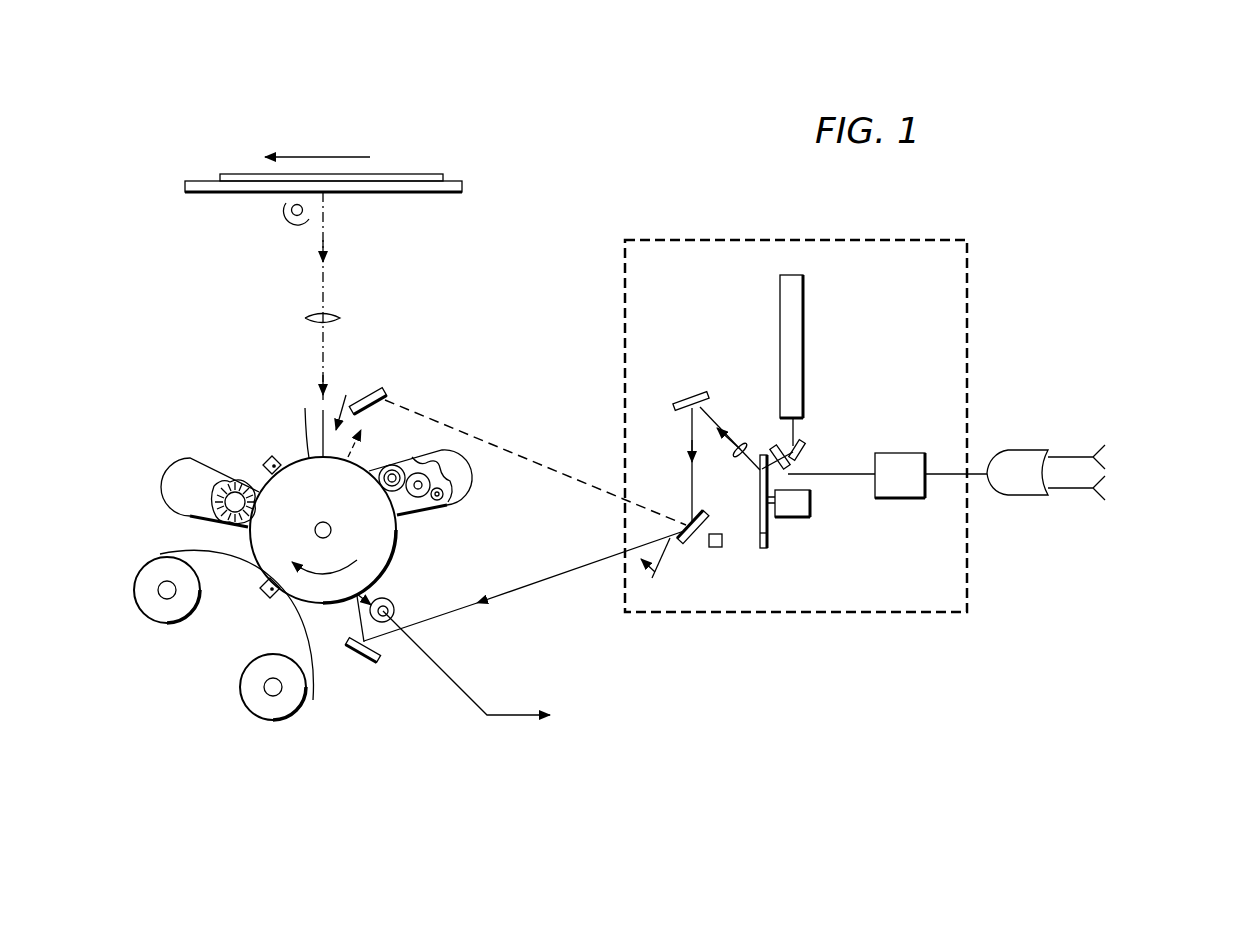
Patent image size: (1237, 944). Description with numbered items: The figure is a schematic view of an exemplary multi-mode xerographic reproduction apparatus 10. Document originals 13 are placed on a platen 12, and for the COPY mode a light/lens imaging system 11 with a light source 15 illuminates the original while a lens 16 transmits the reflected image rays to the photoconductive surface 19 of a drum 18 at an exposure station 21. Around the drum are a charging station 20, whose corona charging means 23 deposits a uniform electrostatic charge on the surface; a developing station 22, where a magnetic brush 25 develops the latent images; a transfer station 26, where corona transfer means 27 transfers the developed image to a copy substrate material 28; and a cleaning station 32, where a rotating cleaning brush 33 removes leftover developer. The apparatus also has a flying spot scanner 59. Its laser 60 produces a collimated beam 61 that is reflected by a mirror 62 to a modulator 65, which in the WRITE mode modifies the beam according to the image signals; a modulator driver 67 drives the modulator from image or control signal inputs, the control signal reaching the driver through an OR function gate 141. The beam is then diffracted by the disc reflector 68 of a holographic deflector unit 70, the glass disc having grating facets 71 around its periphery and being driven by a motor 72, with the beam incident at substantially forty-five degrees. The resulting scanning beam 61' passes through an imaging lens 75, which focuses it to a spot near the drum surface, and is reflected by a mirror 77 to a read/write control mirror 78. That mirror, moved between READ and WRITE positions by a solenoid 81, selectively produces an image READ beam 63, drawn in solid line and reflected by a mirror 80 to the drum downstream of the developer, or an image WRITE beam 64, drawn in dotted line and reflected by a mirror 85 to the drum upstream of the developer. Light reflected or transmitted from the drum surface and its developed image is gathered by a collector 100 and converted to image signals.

The xerographic reproduction apparatus 10 is at (573, 223).
The light/lens imaging system 11 is at (338, 273).
The platen 12 is at (462, 185).
The document original 13 is at (405, 174).
The light source 15 is at (289, 221).
The lens 16 is at (341, 316).
The drum 18 is at (313, 457).
The photoconductive surface 19 is at (398, 560).
The charging station 20 is at (202, 465).
The exposure station 21 is at (371, 389).
The developing station 22 is at (440, 478).
The corona charging means 23 is at (265, 458).
The magnetic brush 25 is at (392, 465).
The transfer station 26 is at (240, 590).
The corona transfer means 27 is at (270, 600).
The copy substrate material 28 is at (308, 700).
The cleaning station 32 is at (227, 538).
The rotating cleaning brush 33 is at (205, 507).
The flying spot scanner 59 is at (828, 228).
The laser 60 is at (805, 315).
The collimated beam 61 is at (826, 423).
The scanning beam 61' is at (665, 465).
The mirror 62 is at (803, 450).
The image READ beam 63 is at (542, 582).
The image WRITE beam 64 is at (495, 450).
The modulator 65 is at (784, 469).
The modulator driver 67 is at (918, 452).
The disc reflector 68 is at (771, 522).
The holographic deflector unit 70 is at (793, 524).
The grating facets 71 is at (762, 548).
The motor 72 is at (810, 513).
The imaging lens 75 is at (748, 444).
The mirror 77 is at (700, 393).
The read/write control mirror 78 is at (703, 528).
The mirror 80 is at (381, 659).
The solenoid 81 is at (716, 548).
The mirror 85 is at (387, 402).
The collector 100 is at (441, 598).
The OR function gate 141 is at (1023, 448).